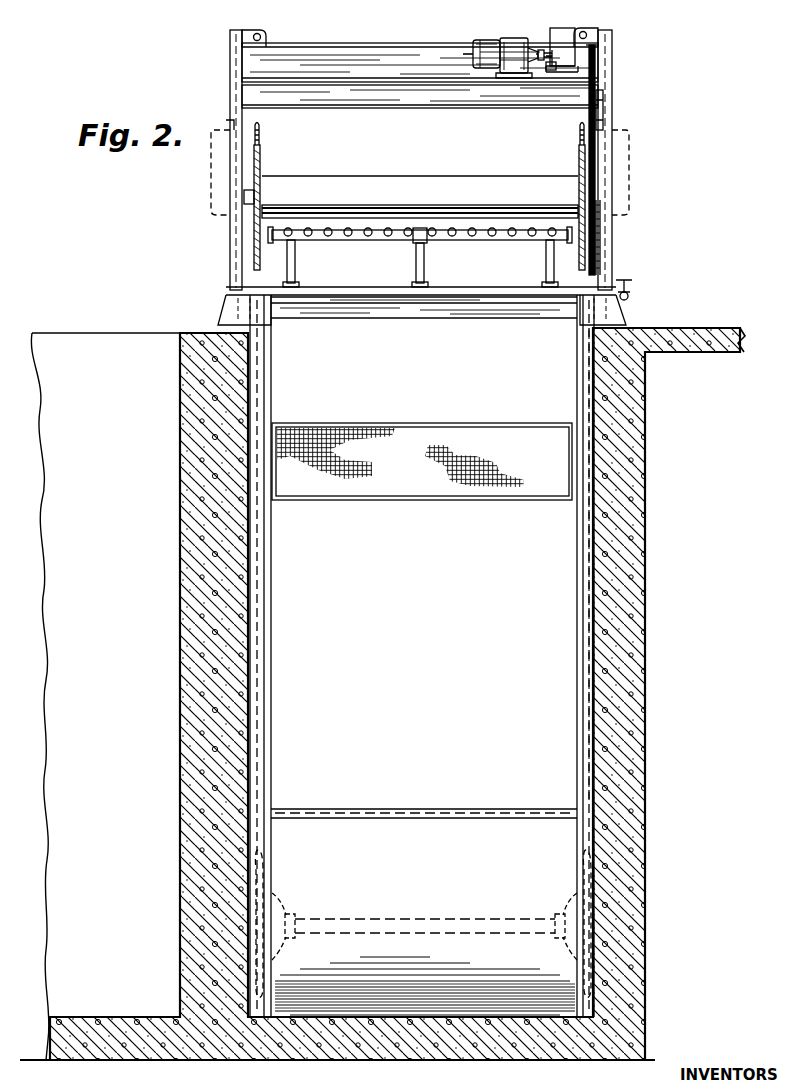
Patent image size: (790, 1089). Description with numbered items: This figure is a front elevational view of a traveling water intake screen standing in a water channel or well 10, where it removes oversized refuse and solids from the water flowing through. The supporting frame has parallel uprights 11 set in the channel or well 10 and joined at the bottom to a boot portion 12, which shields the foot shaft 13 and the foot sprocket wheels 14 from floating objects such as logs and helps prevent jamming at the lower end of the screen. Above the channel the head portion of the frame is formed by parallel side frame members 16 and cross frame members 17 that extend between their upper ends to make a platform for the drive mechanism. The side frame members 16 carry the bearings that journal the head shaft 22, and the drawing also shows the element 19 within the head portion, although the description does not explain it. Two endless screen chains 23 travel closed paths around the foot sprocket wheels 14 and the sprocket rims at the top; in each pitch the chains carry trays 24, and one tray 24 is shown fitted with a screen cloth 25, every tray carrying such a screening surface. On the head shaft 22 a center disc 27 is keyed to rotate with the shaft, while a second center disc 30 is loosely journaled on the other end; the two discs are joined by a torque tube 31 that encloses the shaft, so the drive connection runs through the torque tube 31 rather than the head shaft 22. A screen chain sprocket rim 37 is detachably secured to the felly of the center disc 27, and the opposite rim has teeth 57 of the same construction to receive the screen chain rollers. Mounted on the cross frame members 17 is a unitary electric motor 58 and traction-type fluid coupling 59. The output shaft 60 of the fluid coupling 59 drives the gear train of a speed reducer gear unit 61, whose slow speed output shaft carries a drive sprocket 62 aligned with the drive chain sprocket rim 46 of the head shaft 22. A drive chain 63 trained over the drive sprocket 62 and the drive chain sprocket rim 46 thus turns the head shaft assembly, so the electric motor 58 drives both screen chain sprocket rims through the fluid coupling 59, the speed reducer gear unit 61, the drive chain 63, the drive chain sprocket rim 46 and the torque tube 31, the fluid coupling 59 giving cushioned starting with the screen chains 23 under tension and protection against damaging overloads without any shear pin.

The water channel or well 10 is at (246, 662).
The parallel uprights 11 is at (573, 632).
The boot portion 12 is at (414, 809).
The foot shaft 13 is at (430, 919).
The foot sprocket wheels 14 is at (290, 958).
The side frame members 16 is at (612, 252).
The cross frame members 17 is at (440, 108).
The spray pipe 19 is at (378, 241).
The head shaft 22 is at (214, 190).
The endless screen chains 23 is at (578, 716).
The trays 24 is at (430, 500).
The screen cloth 25 is at (428, 433).
The center disc 27 is at (579, 160).
The second center disc 30 is at (262, 160).
The torque tube 31 is at (401, 176).
The screen chain sprocket rim 37 is at (580, 130).
The drive chain sprocket rim 46 is at (597, 236).
The teeth 57 is at (262, 128).
The electric motor 58 is at (476, 40).
The traction-type fluid coupling 59 is at (519, 29).
The output shaft 60 is at (541, 61).
The speed reducer gear unit 61 is at (562, 50).
The drive sprocket 62 is at (598, 52).
The drive chain 63 is at (603, 118).